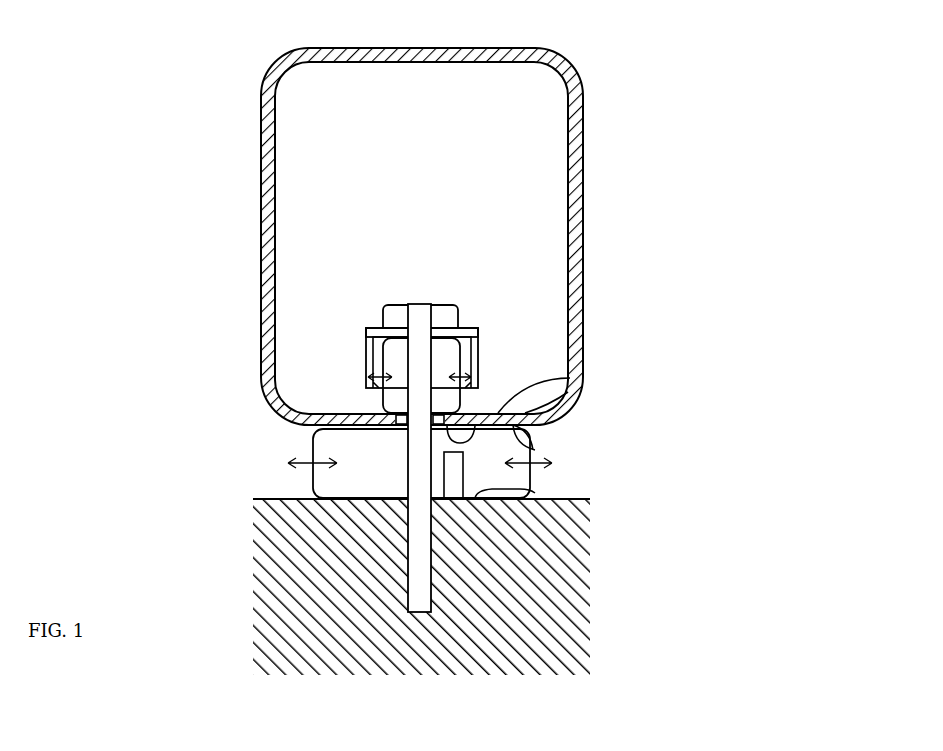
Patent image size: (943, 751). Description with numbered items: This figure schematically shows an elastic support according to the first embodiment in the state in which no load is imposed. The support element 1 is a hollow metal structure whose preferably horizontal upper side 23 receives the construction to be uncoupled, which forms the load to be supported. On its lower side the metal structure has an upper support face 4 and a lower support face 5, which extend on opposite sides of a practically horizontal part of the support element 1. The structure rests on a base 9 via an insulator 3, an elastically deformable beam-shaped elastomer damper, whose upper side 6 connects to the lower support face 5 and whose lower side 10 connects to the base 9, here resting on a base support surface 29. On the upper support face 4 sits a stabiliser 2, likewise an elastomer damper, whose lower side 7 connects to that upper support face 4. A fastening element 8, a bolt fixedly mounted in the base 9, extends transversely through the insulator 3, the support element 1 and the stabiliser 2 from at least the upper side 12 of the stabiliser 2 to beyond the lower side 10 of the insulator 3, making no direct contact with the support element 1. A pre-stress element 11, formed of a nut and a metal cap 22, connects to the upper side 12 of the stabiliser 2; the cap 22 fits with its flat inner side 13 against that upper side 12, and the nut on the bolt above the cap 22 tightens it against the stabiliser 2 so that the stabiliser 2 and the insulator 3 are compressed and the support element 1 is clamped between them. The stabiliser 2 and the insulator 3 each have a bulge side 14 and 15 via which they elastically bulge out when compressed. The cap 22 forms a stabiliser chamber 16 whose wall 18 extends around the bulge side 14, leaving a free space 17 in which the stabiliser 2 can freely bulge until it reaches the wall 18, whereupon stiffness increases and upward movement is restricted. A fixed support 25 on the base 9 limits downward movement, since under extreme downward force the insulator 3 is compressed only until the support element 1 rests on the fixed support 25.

The support element 1 is at (262, 247).
The stabiliser 2 is at (395, 367).
The insulator 3 is at (345, 452).
The upper support face 4 is at (393, 417).
The lower support face 5 is at (560, 463).
The upper side of the insulator 6 is at (583, 377).
The lower side of the stabiliser 7 is at (486, 420).
The fastening element 8 is at (418, 568).
The base 9 is at (268, 555).
The lower side of the insulator 10 is at (530, 532).
The pre-stress element 11 is at (397, 315).
The upper side of the stabiliser 12 is at (441, 338).
The flat inner side 13 is at (360, 337).
The bulge side 14 is at (383, 397).
The bulge side 15 is at (310, 472).
The stabiliser chamber 16 is at (472, 320).
The free space 17 is at (462, 347).
The wall of the cap 18 is at (473, 357).
The metal cap 22 is at (357, 333).
The upper side 23 is at (497, 47).
The fixed support 25 is at (458, 478).
The base support surface 29 is at (530, 492).